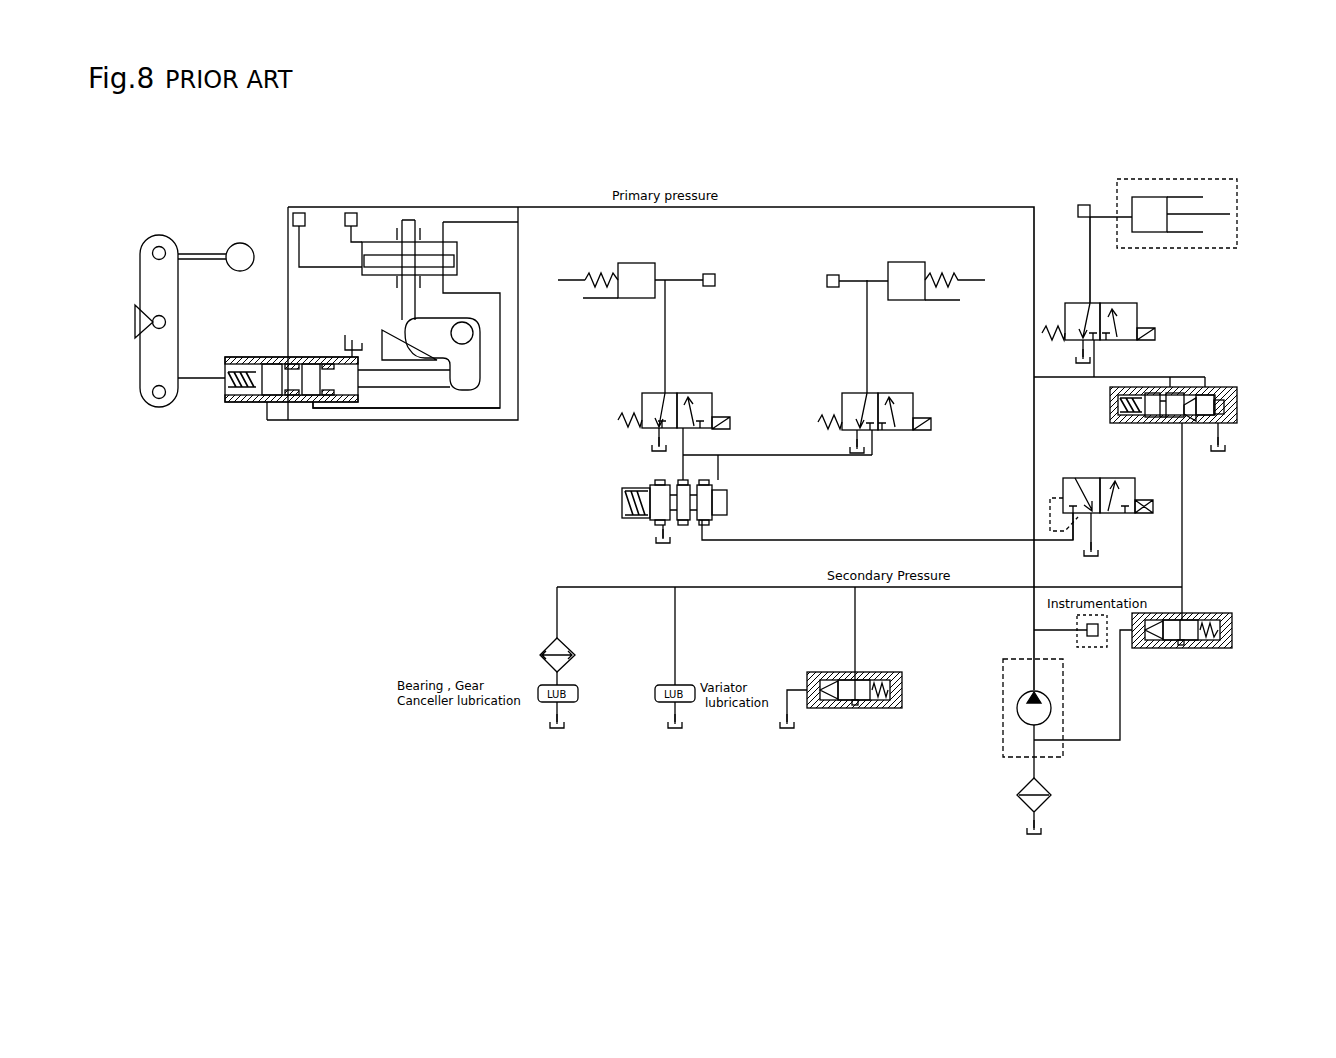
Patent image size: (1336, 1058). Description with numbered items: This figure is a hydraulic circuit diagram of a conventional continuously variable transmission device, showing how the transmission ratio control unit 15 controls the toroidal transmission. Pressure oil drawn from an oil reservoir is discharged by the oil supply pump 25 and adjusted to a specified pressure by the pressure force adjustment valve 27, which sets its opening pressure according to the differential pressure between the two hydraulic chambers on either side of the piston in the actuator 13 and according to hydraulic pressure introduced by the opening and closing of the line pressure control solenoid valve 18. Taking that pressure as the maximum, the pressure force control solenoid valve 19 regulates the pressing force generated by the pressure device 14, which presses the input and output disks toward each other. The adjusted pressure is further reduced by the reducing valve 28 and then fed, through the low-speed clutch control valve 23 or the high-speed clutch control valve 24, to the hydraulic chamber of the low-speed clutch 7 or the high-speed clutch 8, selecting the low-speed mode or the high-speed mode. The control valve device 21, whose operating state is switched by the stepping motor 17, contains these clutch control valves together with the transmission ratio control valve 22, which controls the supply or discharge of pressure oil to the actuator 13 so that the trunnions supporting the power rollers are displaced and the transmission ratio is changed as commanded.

The transmission ratio control unit 15 is at (210, 198).
The stepping motor 17 is at (256, 258).
The actuator 13 is at (384, 262).
The control valve device 21 is at (316, 342).
The transmission ratio control valve 22 is at (340, 410).
The high-speed clutch 8 is at (566, 279).
The low-speed clutch 7 is at (968, 280).
The high-speed clutch control valve 24 is at (684, 395).
The low-speed clutch control valve 23 is at (880, 400).
The reducing valve 28 is at (706, 503).
The pressure device 14 is at (1141, 200).
The pressure force control solenoid valve 19 is at (1108, 312).
The pressure force adjustment valve 27 is at (1240, 408).
The line pressure control solenoid valve 18 is at (1073, 492).
The oil supply pump 25 is at (1052, 705).